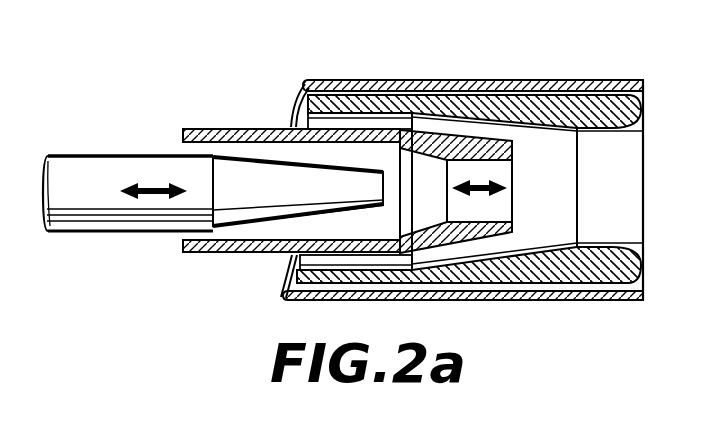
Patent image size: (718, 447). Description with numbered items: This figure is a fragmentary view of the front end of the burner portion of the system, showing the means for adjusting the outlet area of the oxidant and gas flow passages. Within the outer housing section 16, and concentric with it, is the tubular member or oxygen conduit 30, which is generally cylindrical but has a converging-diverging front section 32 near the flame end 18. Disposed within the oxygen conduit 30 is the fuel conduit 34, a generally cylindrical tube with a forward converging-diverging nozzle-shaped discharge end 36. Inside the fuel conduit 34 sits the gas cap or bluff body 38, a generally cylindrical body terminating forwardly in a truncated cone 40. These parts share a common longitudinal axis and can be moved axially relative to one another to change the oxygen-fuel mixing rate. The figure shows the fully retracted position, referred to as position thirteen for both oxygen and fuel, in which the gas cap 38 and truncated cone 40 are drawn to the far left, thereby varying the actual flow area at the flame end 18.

The housing section 16 is at (521, 79).
The flame end 18 is at (647, 80).
The tubular member 30 is at (303, 91).
The converging-diverging front section 32 is at (647, 136).
The fuel conduit 34 is at (262, 252).
The discharge end 36 is at (511, 142).
The gas cap 38 is at (129, 234).
The truncated cone 40 is at (333, 187).